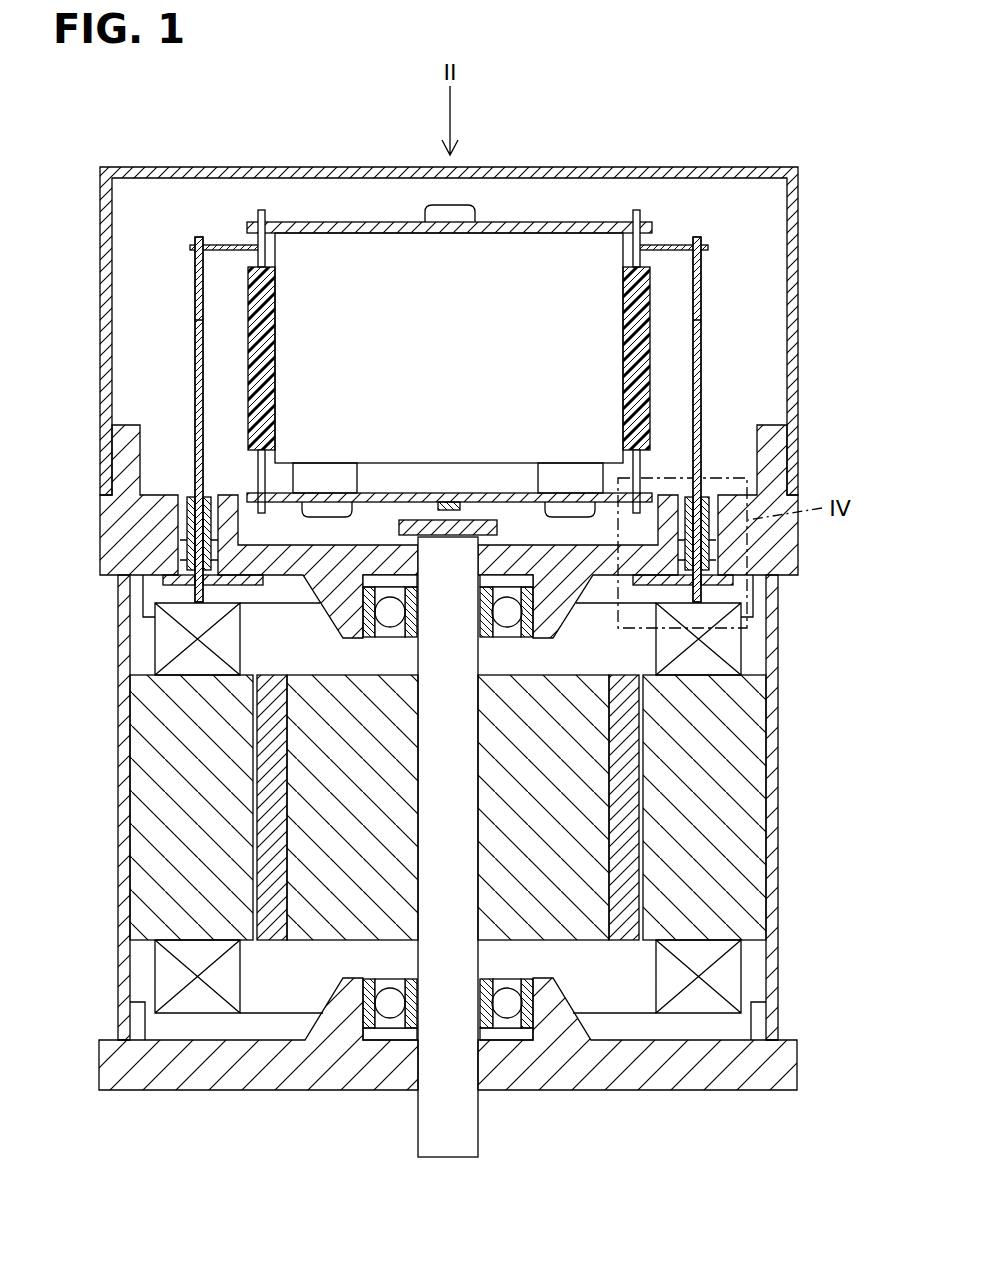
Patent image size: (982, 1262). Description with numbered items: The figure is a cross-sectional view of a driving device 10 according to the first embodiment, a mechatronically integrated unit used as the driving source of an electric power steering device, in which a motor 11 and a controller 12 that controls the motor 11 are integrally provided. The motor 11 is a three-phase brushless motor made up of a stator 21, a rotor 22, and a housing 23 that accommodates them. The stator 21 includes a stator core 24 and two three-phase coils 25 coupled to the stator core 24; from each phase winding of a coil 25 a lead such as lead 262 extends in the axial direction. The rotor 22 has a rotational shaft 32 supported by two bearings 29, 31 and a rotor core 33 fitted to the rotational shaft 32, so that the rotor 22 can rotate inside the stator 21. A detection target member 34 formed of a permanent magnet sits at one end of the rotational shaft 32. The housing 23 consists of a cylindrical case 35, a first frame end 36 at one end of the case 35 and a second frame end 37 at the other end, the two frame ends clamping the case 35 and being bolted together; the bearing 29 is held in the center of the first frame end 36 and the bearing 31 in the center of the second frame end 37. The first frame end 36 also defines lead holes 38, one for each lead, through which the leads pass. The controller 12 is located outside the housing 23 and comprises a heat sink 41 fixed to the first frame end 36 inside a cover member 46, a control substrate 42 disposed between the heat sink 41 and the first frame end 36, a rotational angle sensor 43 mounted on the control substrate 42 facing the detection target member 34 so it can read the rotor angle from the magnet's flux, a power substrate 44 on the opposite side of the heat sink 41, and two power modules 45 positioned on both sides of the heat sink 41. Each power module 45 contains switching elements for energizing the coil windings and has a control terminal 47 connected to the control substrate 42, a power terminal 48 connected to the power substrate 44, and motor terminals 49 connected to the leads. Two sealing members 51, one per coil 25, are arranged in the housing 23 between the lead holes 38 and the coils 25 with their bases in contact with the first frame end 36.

The driving device 10 is at (92, 152).
The motor 11 is at (93, 853).
The controller 12 is at (163, 295).
The stator 21 is at (766, 880).
The rotor 22 is at (588, 950).
The housing 23 is at (108, 936).
The stator core 24 is at (730, 768).
The coil 25 is at (163, 638).
The bearing 29 is at (389, 617).
The bearing 31 is at (389, 1010).
The rotational shaft 32 is at (460, 1122).
The rotor core 33 is at (540, 925).
The detection target member 34 is at (477, 520).
The case 35 is at (122, 784).
The first frame end 36 is at (120, 548).
The second frame end 37 is at (108, 1060).
The lead holes 38 is at (178, 507).
The heat sink 41 is at (548, 245).
The control substrate 42 is at (250, 495).
The rotational angle sensor 43 is at (440, 500).
The power substrate 44 is at (392, 222).
The power module 45 is at (252, 362).
The cover member 46 is at (766, 168).
The control terminal 47 is at (260, 472).
The power terminal 48 is at (259, 212).
The motor terminals 49 is at (199, 240).
The sealing member 51 is at (173, 587).
The lead 262 is at (196, 318).